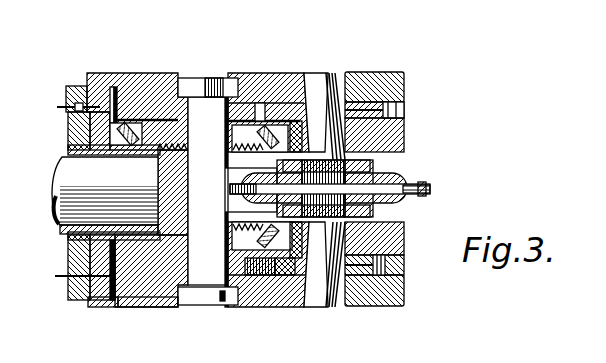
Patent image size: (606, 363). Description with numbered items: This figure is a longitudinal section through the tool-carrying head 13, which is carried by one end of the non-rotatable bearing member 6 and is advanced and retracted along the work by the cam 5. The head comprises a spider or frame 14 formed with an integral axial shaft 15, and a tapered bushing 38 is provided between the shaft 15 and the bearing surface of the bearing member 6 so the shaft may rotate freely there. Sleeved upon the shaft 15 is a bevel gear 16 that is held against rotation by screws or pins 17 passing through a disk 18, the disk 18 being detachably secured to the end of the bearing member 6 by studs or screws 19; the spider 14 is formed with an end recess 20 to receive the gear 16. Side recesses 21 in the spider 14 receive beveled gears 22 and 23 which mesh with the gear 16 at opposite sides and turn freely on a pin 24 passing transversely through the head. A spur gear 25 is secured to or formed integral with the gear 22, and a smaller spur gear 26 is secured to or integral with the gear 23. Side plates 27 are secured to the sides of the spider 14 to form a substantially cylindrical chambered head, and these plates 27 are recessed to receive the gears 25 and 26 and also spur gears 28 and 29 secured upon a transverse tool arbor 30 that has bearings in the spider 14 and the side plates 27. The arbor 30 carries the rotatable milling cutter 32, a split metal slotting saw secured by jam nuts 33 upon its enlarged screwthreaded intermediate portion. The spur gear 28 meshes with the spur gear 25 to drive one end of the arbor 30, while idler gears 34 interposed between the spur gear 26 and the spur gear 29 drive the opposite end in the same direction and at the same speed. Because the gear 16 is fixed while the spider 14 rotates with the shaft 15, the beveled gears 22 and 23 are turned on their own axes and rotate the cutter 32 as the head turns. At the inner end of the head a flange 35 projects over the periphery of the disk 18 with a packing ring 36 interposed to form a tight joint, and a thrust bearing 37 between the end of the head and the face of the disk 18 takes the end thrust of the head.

The cam 5 is at (323, 97).
The bearing member 6 is at (212, 285).
The tool-carrying head 13 is at (258, 73).
The spider or frame 14 is at (404, 140).
The axial shaft 15 is at (62, 183).
The bevel gear 16 is at (131, 130).
The screws or pins 17 is at (85, 148).
The disk 18 is at (75, 258).
The studs or screws 19 is at (66, 107).
The end recess 20 is at (122, 125).
The side recesses 21 is at (294, 121).
The beveled gear 22 is at (261, 103).
The beveled gear 23 is at (268, 263).
The pin 24 is at (206, 191).
The spur gear 25 is at (238, 78).
The spur gear 26 is at (243, 275).
The side plates 27 is at (365, 78).
The spur gear 28 is at (405, 105).
The spur gear 29 is at (386, 268).
The tool arbor 30 is at (320, 90).
The milling cutter 32 is at (430, 188).
The jam nuts 33 is at (373, 164).
The idler gears 34 is at (239, 182).
The flange 35 is at (95, 306).
The packing ring 36 is at (85, 300).
The thrust bearing 37 is at (125, 305).
The tapered bushing 38 is at (62, 230).